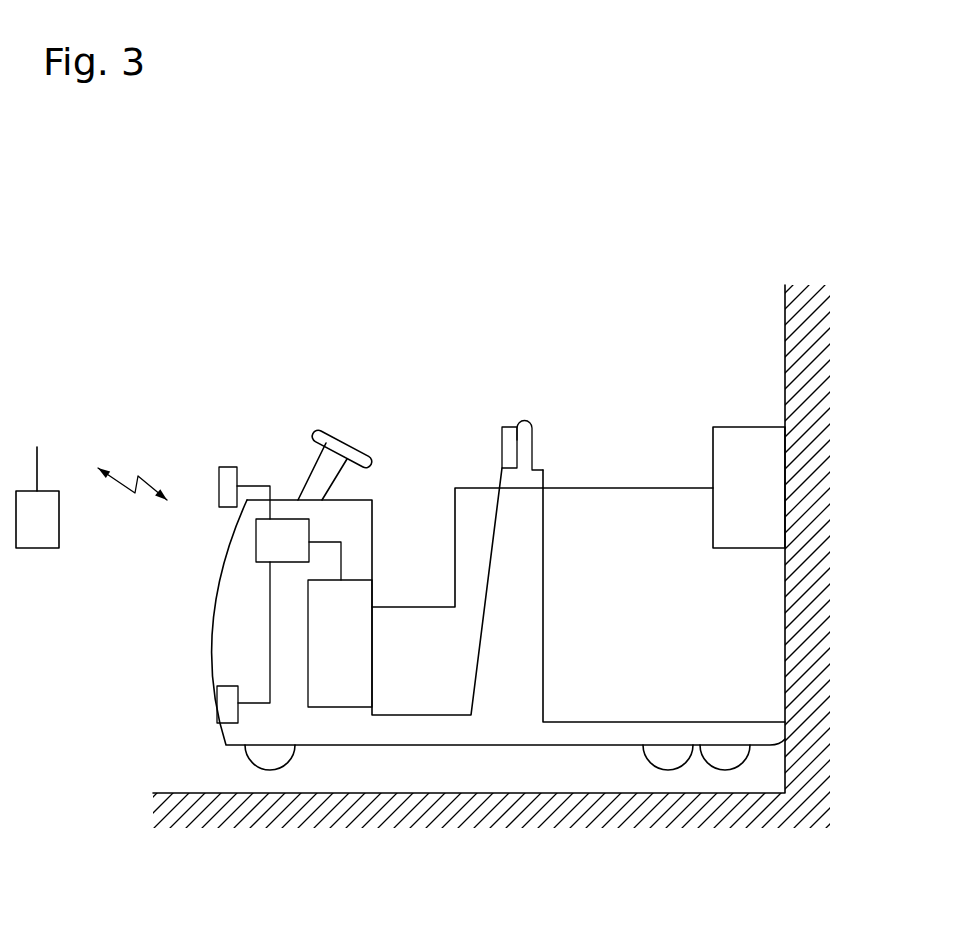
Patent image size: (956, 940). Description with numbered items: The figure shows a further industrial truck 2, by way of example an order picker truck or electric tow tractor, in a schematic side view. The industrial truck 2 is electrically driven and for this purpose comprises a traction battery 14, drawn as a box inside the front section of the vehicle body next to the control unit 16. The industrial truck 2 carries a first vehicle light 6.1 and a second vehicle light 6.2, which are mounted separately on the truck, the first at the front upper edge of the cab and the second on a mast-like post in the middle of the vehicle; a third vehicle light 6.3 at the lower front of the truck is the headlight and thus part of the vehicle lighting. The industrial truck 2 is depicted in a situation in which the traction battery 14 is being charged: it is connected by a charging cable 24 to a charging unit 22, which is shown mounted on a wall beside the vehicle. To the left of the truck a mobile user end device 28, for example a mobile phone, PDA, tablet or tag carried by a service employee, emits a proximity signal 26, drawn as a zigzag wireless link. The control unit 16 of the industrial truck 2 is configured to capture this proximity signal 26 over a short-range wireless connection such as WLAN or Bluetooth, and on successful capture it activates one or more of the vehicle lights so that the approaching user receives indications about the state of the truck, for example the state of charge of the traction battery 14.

The industrial truck 2 is at (530, 305).
The first vehicle light 6.1 is at (228, 477).
The second vehicle light 6.2 is at (512, 438).
The third vehicle light 6.3 is at (228, 705).
The traction battery 14 is at (355, 651).
The control unit 16 is at (300, 554).
The charging unit 22 is at (767, 501).
The charging cable 24 is at (607, 487).
The proximity signal 26 is at (139, 476).
The mobile user end device 28 is at (54, 533).